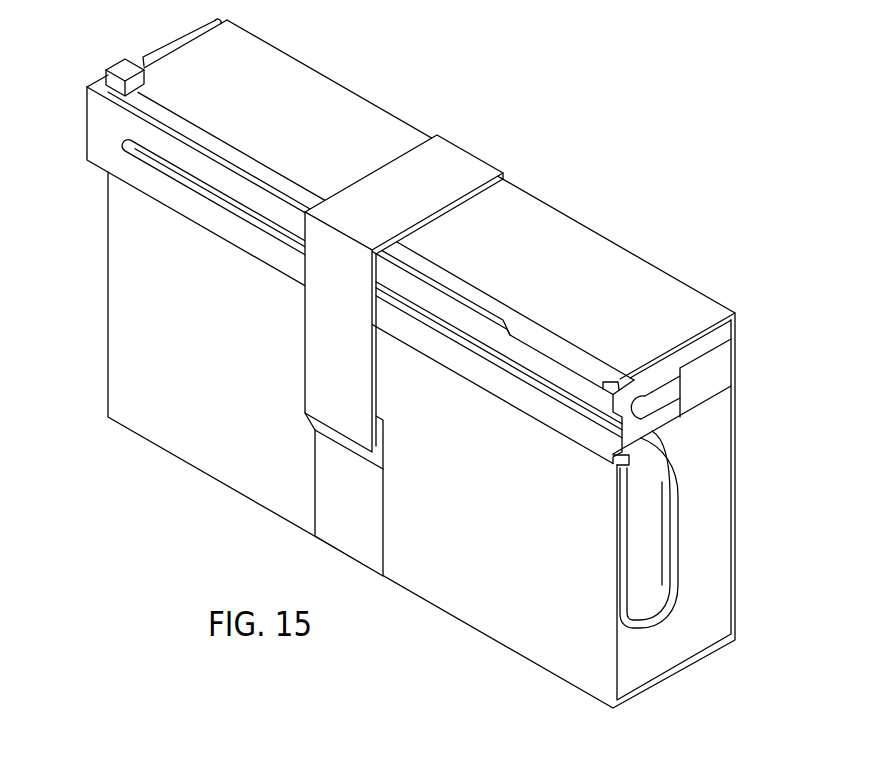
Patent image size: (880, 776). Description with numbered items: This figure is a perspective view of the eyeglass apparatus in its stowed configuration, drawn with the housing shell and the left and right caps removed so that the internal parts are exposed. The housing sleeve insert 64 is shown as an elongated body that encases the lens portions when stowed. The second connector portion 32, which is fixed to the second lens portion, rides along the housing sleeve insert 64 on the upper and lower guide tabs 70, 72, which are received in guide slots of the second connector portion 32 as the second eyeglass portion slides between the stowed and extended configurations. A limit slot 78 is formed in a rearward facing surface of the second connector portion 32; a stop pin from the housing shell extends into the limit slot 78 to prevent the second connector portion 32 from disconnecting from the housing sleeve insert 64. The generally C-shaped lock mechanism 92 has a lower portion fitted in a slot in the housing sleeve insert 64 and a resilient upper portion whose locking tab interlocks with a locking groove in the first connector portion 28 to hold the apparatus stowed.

The first connector portion 28 is at (703, 410).
The second connector portion 32 is at (98, 143).
The housing sleeve insert 64 is at (528, 640).
The upper guide tab 70 is at (610, 380).
The lower guide tab 72 is at (613, 462).
The limit slot 78 is at (213, 200).
The lock mechanism 92 is at (305, 370).